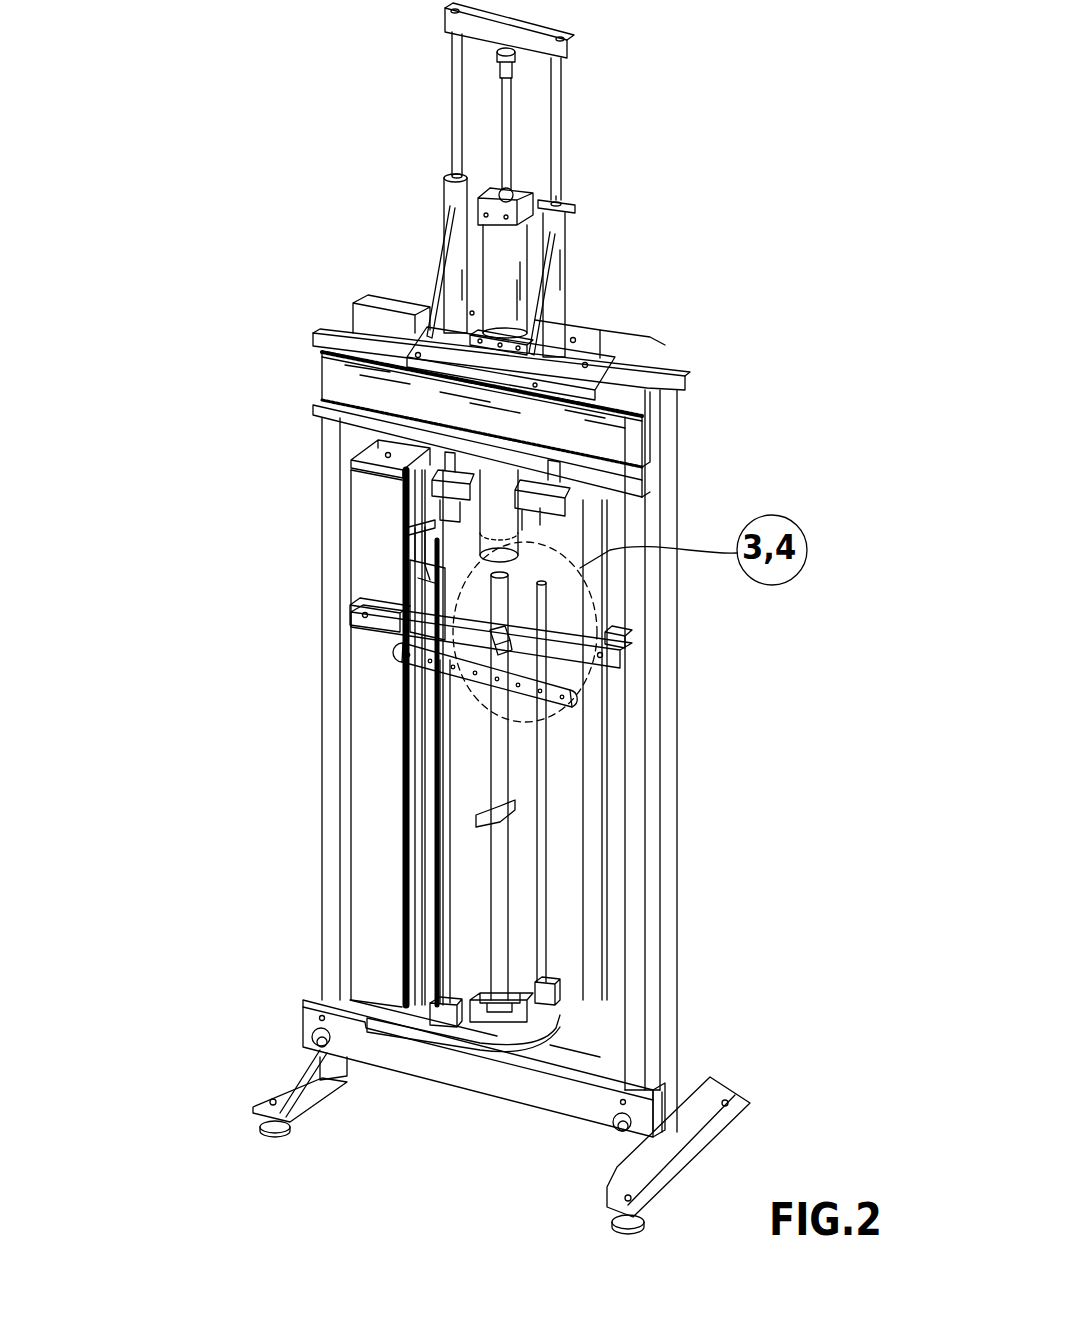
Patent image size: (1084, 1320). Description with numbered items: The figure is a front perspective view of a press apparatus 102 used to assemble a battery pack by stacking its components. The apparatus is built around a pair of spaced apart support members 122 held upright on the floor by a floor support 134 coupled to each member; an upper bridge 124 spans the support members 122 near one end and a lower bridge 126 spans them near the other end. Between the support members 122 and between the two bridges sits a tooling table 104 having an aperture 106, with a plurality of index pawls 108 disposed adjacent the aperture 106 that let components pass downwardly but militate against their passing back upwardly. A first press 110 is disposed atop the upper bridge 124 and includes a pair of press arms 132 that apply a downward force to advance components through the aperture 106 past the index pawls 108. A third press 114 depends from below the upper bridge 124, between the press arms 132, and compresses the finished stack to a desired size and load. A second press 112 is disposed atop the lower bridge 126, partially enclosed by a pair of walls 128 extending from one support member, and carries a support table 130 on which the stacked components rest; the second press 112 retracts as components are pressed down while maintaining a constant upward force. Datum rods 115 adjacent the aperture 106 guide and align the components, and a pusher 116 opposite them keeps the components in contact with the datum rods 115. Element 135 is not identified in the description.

The press apparatus 102 is at (683, 352).
The tooling table 104 is at (560, 710).
The aperture 106 is at (567, 568).
The index pawls 108 is at (347, 623).
The first press 110 is at (536, 250).
The second press 112 is at (375, 923).
The third press 114 is at (505, 490).
The datum rods 115 is at (555, 925).
The pusher 116 is at (560, 740).
The support members 122 is at (322, 540).
The upper bridge 124 is at (623, 452).
The lower bridge 126 is at (492, 1082).
The walls 128 is at (357, 440).
The support table 130 is at (473, 627).
The press arms 132 is at (462, 80).
The floor support 134 is at (277, 1088).
The inner rail 135 is at (613, 827).